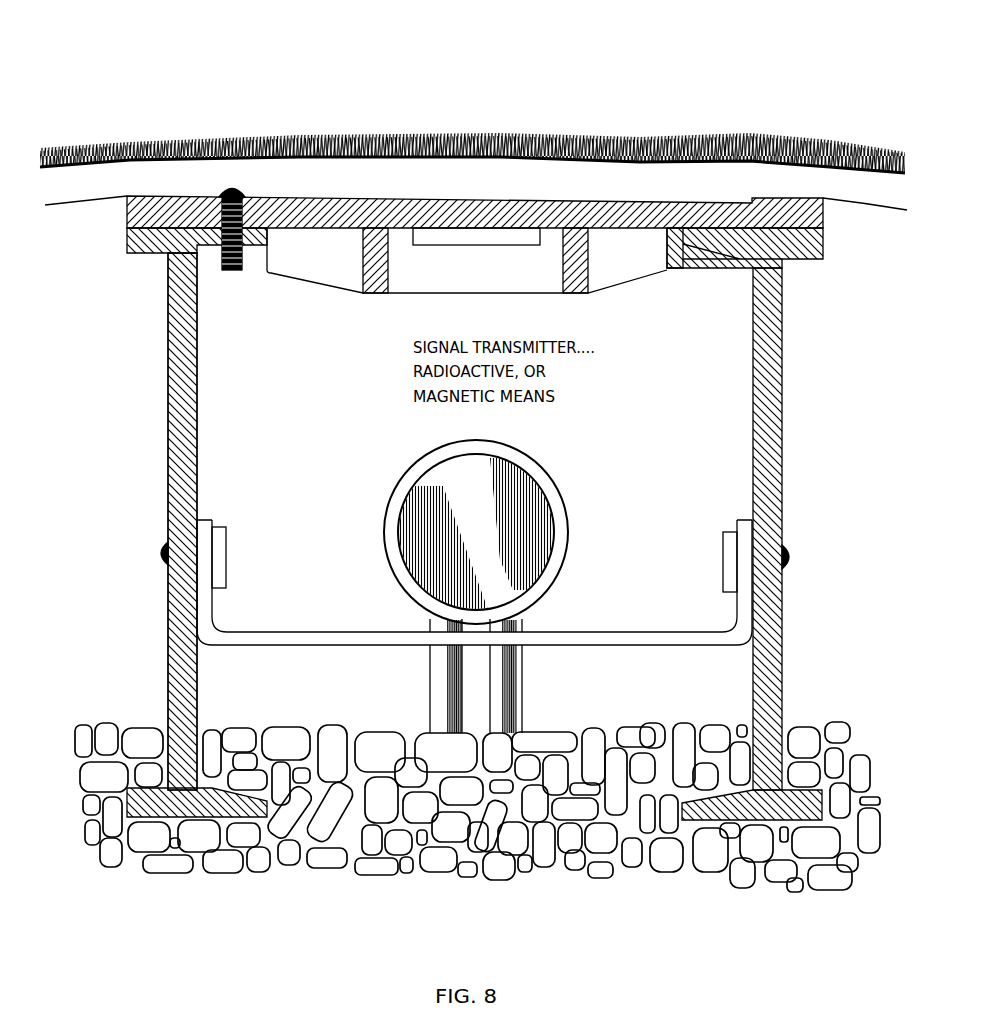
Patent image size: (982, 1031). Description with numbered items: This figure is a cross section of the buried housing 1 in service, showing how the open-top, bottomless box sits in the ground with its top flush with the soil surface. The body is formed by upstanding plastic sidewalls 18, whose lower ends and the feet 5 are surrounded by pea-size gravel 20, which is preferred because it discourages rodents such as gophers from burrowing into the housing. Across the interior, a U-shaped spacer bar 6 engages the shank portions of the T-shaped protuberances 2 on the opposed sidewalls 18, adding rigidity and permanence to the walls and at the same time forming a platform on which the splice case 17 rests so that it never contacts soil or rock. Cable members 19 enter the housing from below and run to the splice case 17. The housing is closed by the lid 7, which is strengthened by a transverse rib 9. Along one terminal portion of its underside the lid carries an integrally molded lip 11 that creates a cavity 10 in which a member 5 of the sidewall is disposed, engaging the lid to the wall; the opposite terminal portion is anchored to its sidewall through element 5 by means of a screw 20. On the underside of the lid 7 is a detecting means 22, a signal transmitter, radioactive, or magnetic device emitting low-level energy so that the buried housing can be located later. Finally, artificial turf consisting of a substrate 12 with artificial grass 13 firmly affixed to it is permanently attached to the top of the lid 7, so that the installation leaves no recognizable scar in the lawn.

The housing 1 is at (777, 490).
The T-shaped protuberance 2 is at (227, 530).
The feet 5 is at (197, 298).
The spacer bar 6 is at (290, 632).
The lid 7 is at (573, 296).
The rib 9 is at (317, 281).
The cavity 10 is at (701, 258).
The lip 11 is at (740, 250).
The substrate 12 is at (237, 170).
The artificial grass 13 is at (370, 137).
The splice case 17 is at (538, 465).
The sidewall 18 is at (200, 442).
The cable member 19 is at (440, 683).
The pea-size gravel 20 is at (372, 866).
The detecting means 22 is at (445, 245).